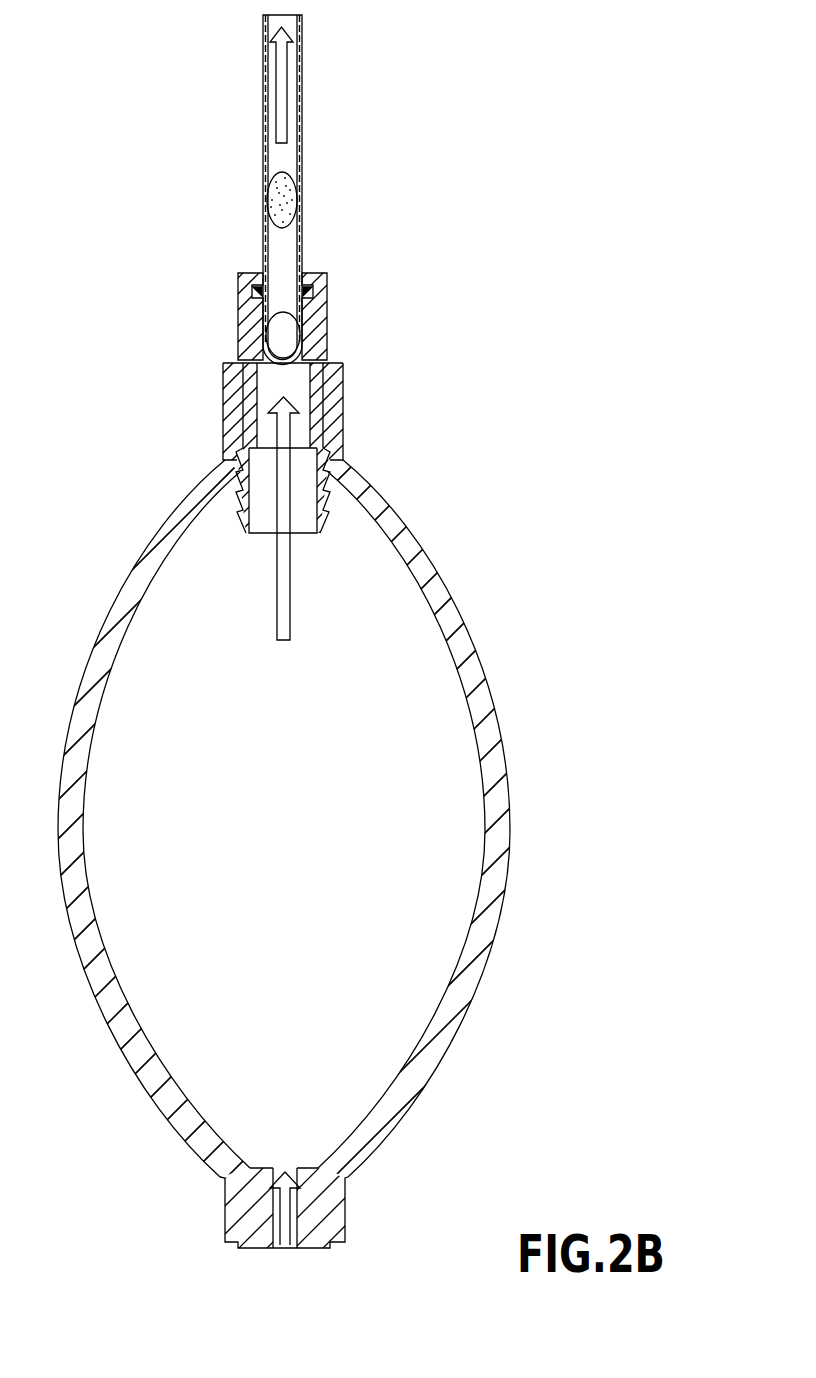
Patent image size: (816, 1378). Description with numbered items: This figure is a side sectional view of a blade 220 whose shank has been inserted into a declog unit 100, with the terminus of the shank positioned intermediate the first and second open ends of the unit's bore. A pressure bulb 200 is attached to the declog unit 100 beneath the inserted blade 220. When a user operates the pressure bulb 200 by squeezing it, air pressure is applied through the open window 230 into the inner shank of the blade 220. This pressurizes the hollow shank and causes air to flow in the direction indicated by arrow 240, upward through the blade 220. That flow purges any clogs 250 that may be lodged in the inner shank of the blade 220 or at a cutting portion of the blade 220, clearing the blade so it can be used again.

The declog unit 100 is at (240, 316).
The pressure bulb 200 is at (438, 572).
The blade 220 is at (261, 107).
The open window 230 is at (287, 332).
The arrow 240 is at (287, 72).
The clogs 250 is at (297, 195).